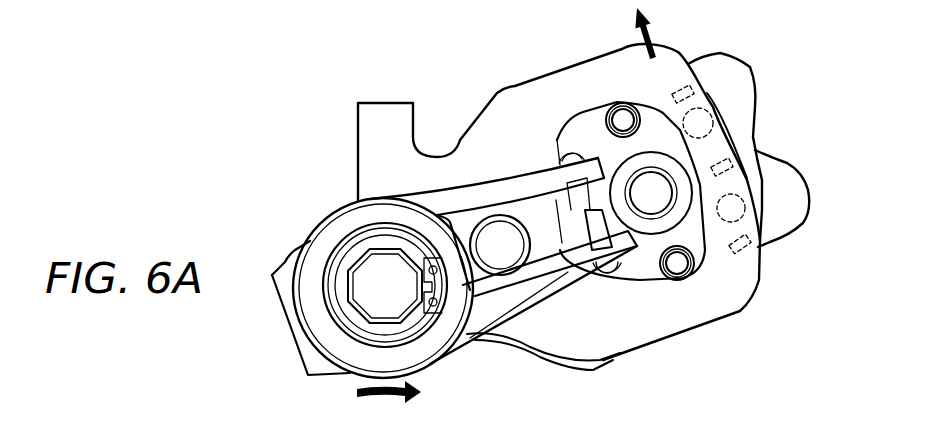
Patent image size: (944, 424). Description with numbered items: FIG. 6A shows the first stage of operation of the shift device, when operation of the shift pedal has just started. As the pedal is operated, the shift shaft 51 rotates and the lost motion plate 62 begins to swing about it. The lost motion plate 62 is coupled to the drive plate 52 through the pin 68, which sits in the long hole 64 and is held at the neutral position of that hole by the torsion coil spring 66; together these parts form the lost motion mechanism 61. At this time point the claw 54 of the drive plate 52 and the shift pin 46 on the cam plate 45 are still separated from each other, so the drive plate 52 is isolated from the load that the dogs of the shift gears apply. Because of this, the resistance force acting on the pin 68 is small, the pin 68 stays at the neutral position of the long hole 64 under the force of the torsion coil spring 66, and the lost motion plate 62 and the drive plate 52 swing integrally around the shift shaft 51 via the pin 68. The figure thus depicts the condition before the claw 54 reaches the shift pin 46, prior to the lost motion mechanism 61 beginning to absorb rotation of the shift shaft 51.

The cam plate 45 is at (737, 83).
The shift pin 46 is at (745, 205).
The shift shaft 51 is at (375, 303).
The drive plate 52 is at (533, 100).
The claw 54 is at (740, 248).
The lost motion mechanism 61 is at (294, 194).
The lost motion plate 62 is at (433, 203).
The long hole 64 is at (496, 225).
The torsion coil spring 66 is at (423, 352).
The pin 68 is at (497, 270).